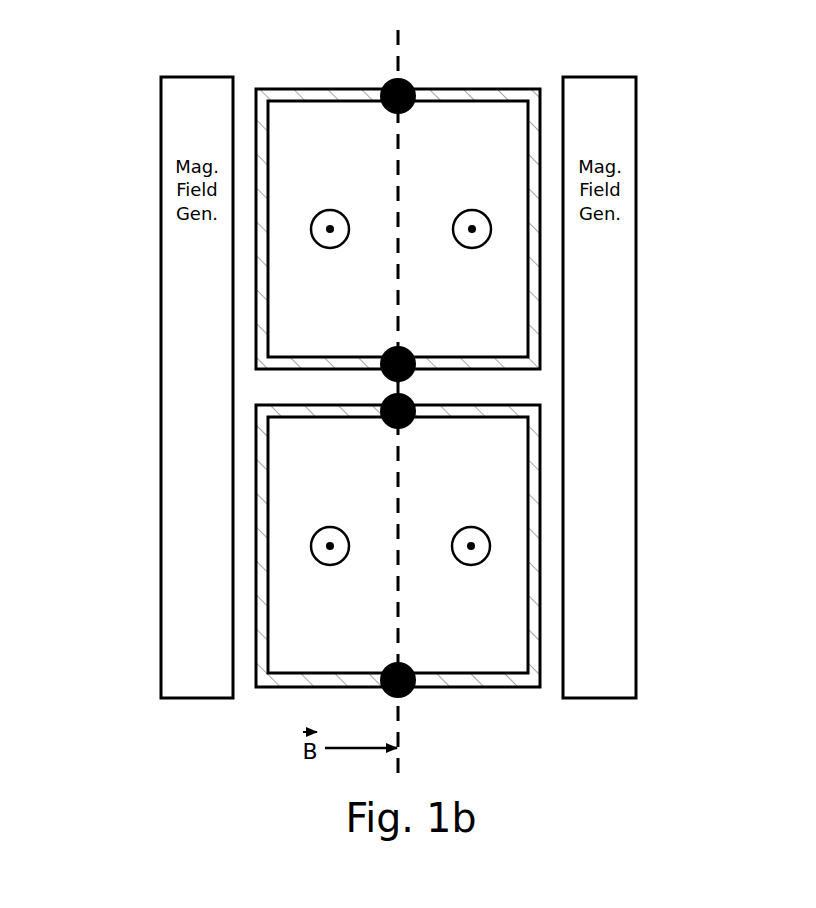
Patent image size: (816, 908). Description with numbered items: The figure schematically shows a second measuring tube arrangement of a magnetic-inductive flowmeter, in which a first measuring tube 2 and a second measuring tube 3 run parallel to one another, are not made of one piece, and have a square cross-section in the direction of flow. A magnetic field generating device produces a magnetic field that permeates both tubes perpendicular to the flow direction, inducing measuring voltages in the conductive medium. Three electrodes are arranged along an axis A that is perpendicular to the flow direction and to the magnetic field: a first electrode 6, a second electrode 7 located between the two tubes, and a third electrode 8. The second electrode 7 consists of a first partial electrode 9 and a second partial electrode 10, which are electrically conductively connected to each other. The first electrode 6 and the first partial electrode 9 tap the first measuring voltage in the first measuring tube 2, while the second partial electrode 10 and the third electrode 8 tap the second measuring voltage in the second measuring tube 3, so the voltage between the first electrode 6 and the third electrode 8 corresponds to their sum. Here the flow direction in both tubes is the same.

The first measuring tube 2 is at (300, 90).
The second measuring tube 3 is at (452, 682).
The first electrode 6 is at (402, 80).
The second electrode 7 is at (345, 386).
The third electrode 8 is at (412, 668).
The first partial electrode 9 is at (385, 352).
The second partial electrode 10 is at (385, 425).
The axis A is at (400, 178).